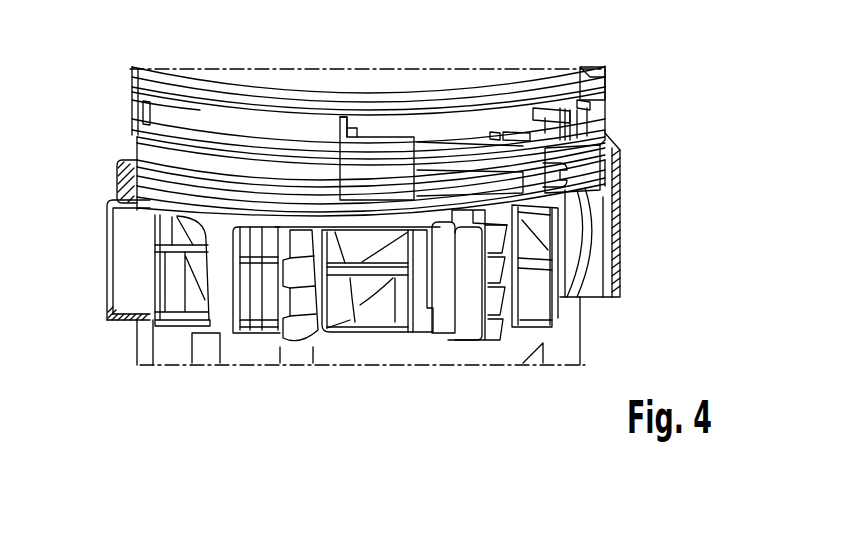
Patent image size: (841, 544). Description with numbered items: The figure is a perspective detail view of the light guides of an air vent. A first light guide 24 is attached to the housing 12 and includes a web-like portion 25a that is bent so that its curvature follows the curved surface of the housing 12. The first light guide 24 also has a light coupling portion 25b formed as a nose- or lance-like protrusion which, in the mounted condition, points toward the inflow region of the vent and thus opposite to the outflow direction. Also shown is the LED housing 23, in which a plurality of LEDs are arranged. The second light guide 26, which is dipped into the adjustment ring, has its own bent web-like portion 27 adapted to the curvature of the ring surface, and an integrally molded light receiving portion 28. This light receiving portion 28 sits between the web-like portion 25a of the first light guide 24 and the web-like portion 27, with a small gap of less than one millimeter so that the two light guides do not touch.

The housing 12 is at (128, 273).
The LED housing 23 is at (262, 352).
The first light guide 24 is at (120, 200).
The web-like portion 25a is at (133, 170).
The light coupling portion 25b is at (222, 317).
The second light guide 26 is at (546, 118).
The web-like portion 27 is at (357, 130).
The light receiving portion 28 is at (360, 160).